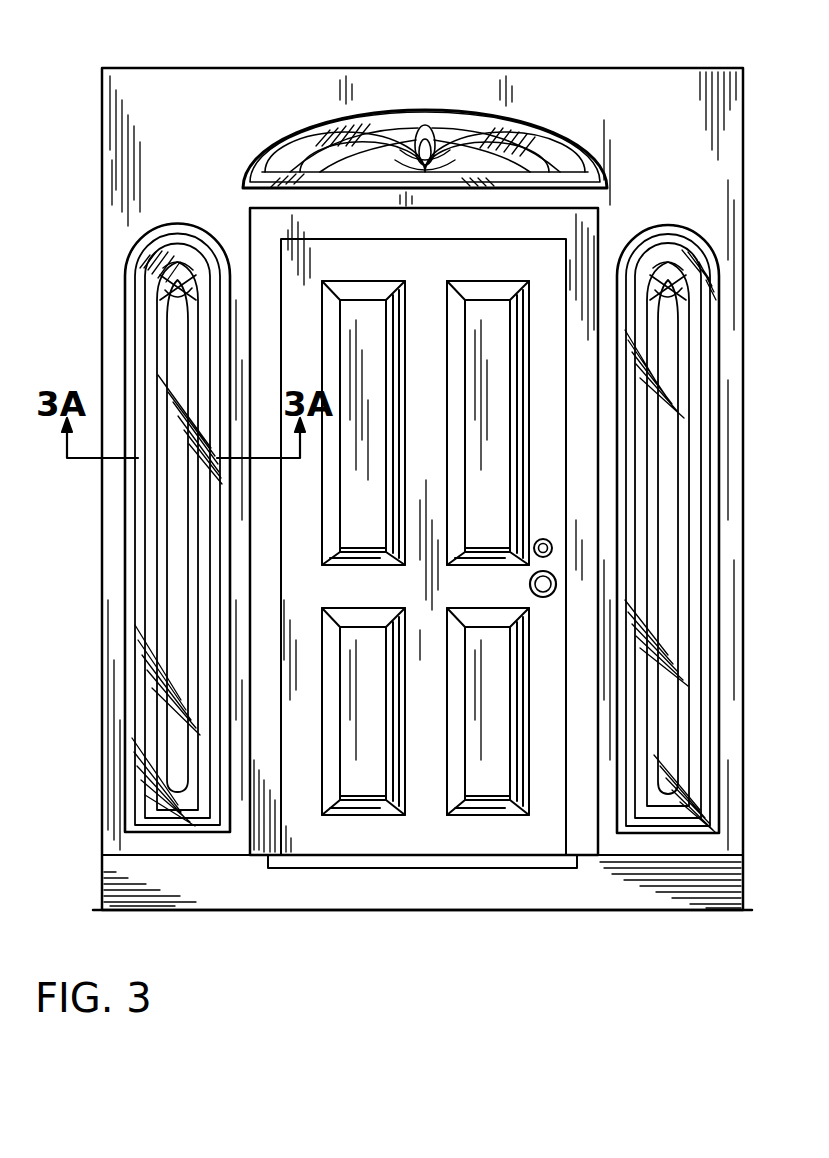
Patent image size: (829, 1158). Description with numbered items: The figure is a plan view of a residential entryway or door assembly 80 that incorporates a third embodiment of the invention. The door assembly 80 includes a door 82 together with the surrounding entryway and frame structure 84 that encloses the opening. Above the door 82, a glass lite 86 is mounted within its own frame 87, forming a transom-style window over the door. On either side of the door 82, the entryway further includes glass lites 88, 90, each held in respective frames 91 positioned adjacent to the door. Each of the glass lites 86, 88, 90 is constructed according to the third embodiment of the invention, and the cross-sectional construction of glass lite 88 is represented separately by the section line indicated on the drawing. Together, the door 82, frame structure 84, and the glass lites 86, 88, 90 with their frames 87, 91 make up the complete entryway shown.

The door assembly 80 is at (608, 66).
The door 82 is at (416, 586).
The frame structure 84 is at (690, 190).
The glass lite 86 is at (460, 110).
The frame 87 is at (294, 146).
The glass lite 88 is at (125, 307).
The glass lite 90 is at (717, 342).
The frames 91 is at (720, 435).